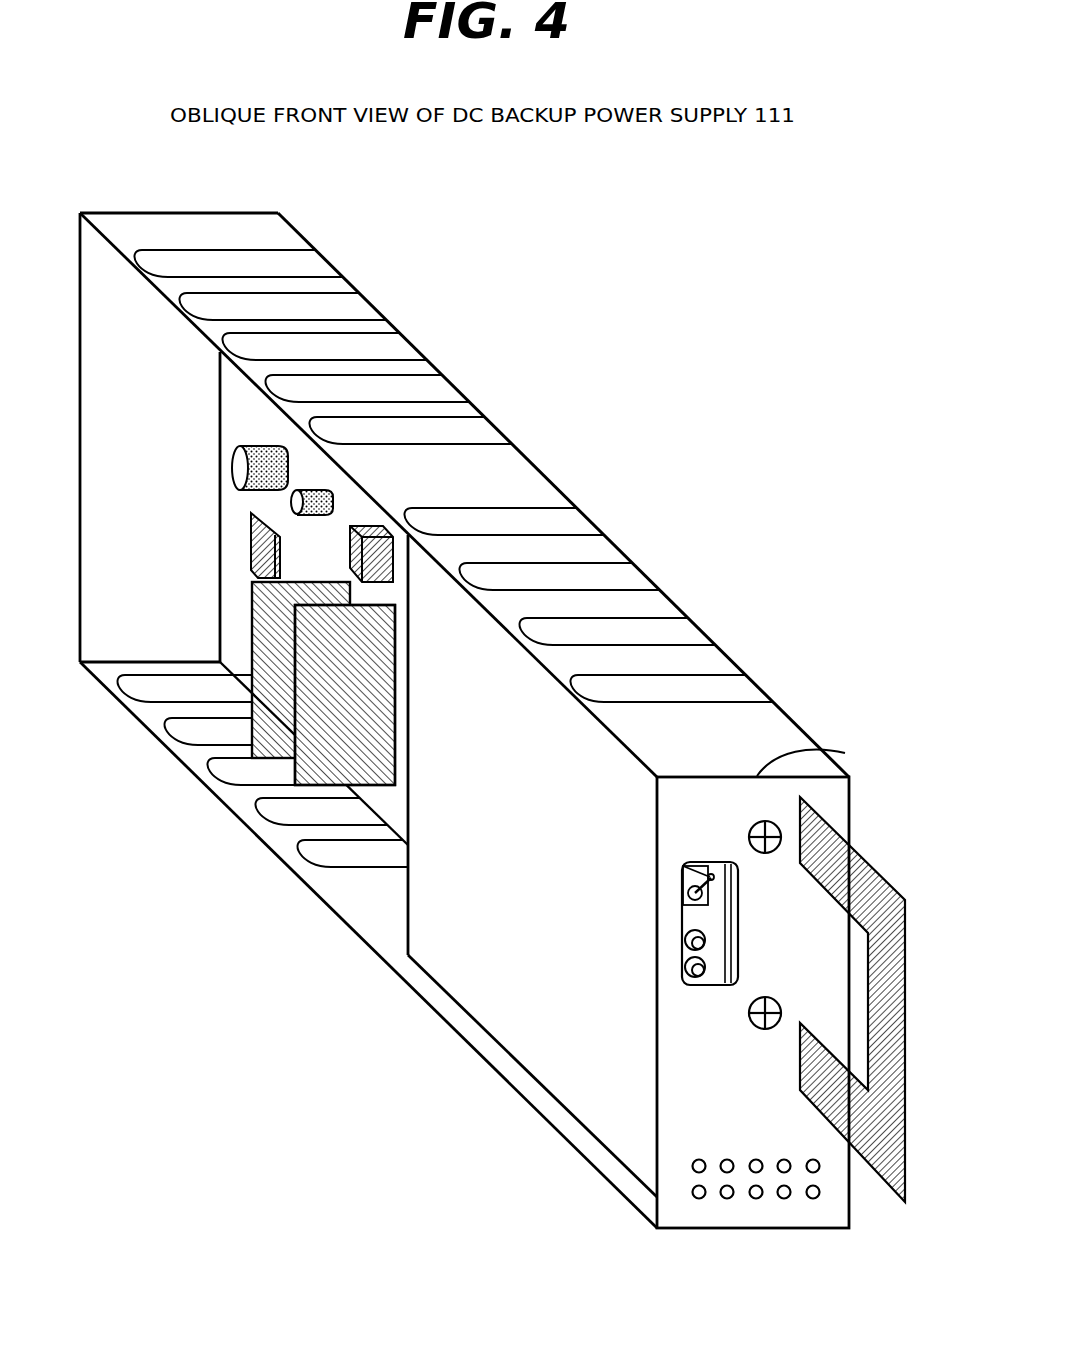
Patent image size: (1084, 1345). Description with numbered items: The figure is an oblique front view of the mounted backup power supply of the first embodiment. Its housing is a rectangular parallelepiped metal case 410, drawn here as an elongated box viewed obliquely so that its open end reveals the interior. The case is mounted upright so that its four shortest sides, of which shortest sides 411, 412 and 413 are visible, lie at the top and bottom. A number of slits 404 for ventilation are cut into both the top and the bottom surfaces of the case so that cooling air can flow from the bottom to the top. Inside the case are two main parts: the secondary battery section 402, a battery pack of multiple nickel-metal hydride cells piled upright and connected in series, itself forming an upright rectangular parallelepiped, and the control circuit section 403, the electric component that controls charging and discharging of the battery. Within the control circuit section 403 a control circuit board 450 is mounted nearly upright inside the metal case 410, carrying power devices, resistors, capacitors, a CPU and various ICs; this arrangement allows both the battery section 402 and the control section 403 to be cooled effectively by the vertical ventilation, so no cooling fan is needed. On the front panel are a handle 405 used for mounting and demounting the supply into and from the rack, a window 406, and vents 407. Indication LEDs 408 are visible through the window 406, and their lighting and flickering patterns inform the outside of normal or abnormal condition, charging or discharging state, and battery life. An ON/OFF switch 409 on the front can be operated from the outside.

The secondary battery section 402 is at (513, 1027).
The control circuit section 403 is at (247, 733).
The slits 404 is at (313, 263).
The handle 405 is at (870, 860).
The window 406 is at (740, 926).
The vents 407 is at (756, 1166).
The indication LEDs 408 is at (690, 963).
The ON/OFF switch 409 is at (693, 890).
The metal case 410 is at (515, 473).
The shortest side 411 is at (845, 753).
The shortest side 412 is at (140, 662).
The shortest side 413 is at (193, 213).
The control circuit board 450 is at (218, 440).